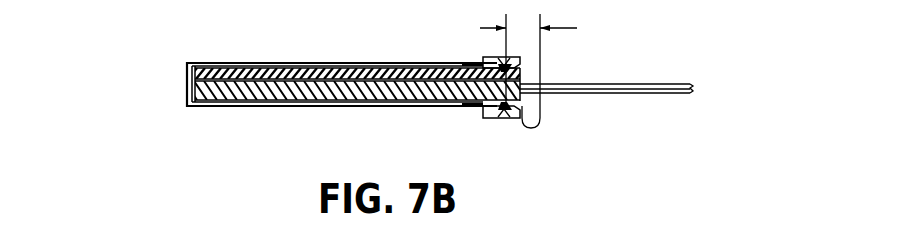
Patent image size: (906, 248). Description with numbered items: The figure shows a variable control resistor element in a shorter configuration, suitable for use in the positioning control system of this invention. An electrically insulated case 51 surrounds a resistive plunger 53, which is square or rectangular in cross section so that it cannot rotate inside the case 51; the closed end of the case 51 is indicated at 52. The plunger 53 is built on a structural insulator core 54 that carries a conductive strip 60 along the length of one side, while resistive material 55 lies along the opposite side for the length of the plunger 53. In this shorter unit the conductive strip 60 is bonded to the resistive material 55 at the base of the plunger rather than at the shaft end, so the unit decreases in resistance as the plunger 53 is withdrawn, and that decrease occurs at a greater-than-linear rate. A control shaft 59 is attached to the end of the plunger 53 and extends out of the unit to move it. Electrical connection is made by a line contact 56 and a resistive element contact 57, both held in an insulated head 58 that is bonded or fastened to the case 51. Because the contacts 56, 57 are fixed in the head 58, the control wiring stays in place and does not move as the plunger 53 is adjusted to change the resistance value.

The electrically insulated case 51 is at (279, 63).
The casing end wall 52 is at (207, 103).
The resistive plunger 53 is at (362, 63).
The structural insulator core 54 is at (423, 95).
The resistive material 55 is at (302, 80).
The line contact 56 is at (505, 108).
The resistive element contact 57 is at (490, 57).
The insulated head 58 is at (492, 118).
The control shaft 59 is at (660, 84).
The conductive strip 60 is at (367, 106).